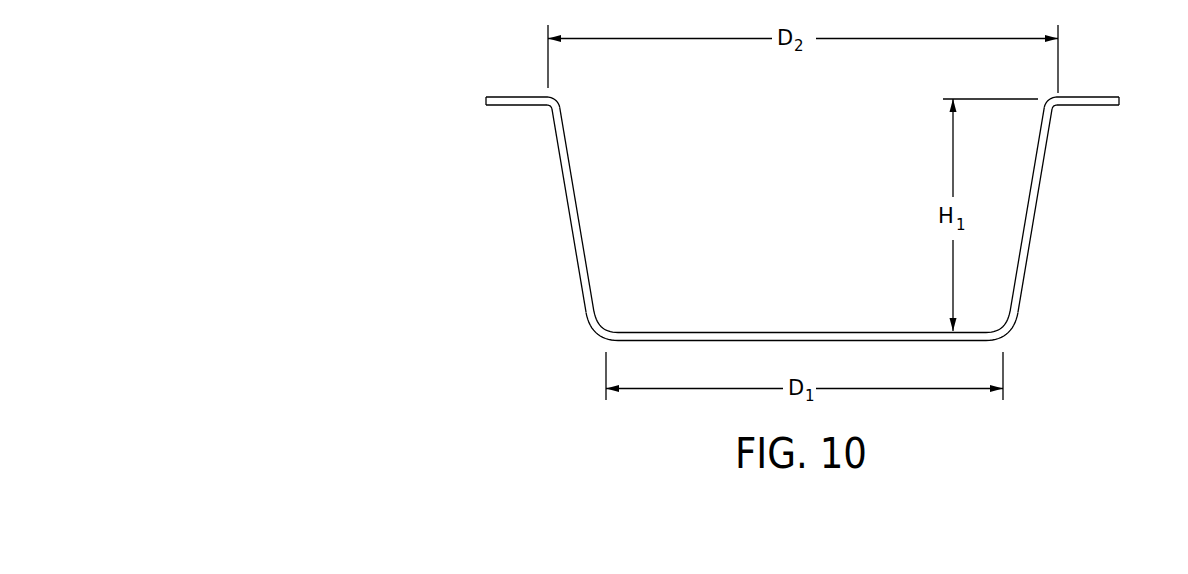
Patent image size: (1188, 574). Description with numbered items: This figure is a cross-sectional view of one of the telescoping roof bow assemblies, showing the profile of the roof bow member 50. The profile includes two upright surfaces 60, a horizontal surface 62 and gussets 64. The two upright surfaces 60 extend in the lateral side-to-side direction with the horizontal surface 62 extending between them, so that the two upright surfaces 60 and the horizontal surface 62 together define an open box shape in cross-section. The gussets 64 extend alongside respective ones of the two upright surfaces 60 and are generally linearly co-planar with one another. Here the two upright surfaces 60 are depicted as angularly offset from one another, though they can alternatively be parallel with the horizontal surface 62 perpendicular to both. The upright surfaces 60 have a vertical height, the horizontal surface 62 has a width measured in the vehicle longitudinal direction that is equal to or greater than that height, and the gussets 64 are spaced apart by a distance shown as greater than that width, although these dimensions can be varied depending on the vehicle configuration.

The roof bow member 50 is at (811, 213).
The upright surfaces 60 is at (570, 222).
The horizontal surface 62 is at (725, 341).
The gussets 64 is at (516, 96).